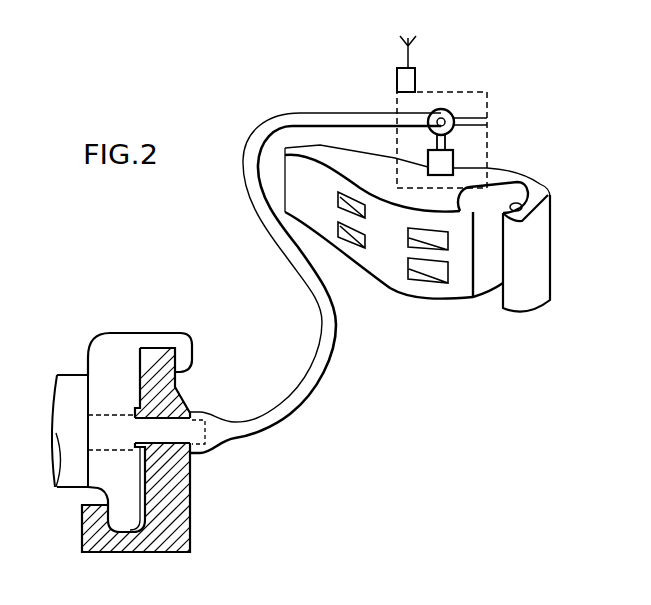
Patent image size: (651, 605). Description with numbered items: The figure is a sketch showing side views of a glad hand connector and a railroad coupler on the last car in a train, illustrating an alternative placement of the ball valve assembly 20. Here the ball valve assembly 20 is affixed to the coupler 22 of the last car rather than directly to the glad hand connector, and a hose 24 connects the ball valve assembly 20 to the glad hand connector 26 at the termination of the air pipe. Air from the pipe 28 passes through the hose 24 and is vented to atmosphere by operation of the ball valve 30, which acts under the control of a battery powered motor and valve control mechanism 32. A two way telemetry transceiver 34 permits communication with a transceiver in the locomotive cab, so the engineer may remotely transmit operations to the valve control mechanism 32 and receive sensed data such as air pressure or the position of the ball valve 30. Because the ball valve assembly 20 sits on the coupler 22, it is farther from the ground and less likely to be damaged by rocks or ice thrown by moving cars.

The ball valve assembly 20 is at (469, 74).
The coupler 22 is at (540, 192).
The hose 24 is at (270, 222).
The glad hand connector 26 is at (133, 340).
The pipe 28 is at (73, 374).
The ball valve 30 is at (488, 122).
The battery powered motor and valve control mechanism 32 is at (453, 164).
The two way telemetry transceiver 34 is at (397, 70).